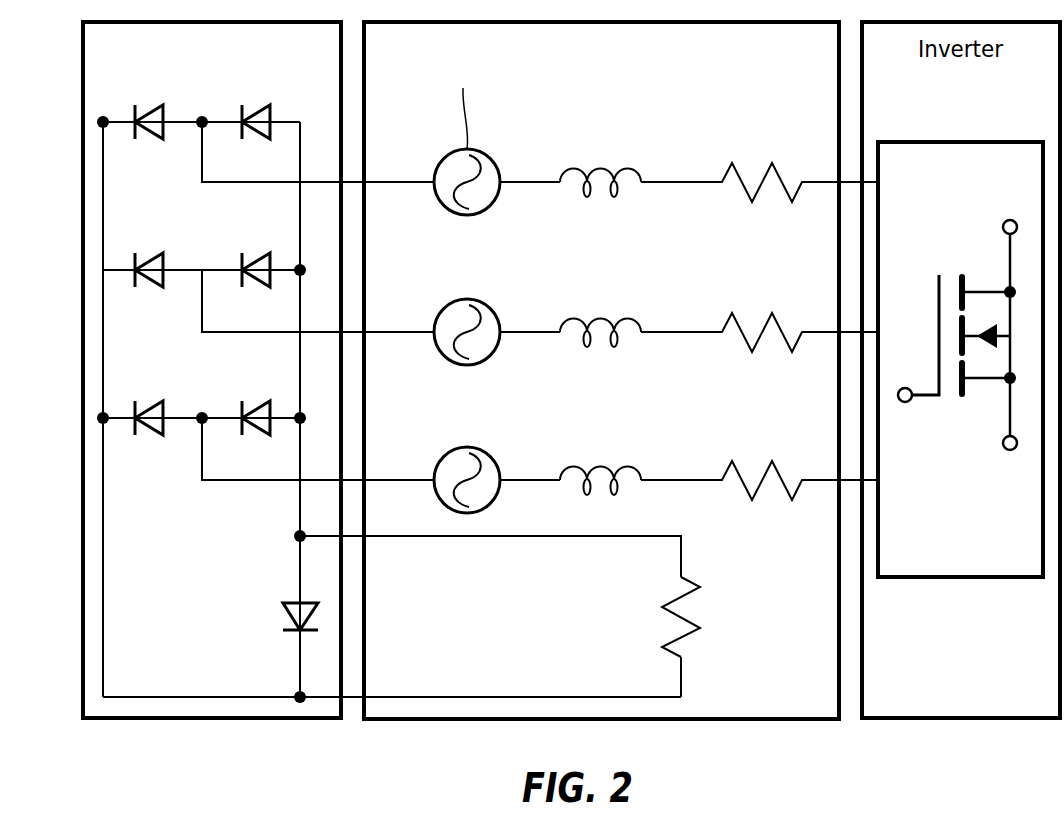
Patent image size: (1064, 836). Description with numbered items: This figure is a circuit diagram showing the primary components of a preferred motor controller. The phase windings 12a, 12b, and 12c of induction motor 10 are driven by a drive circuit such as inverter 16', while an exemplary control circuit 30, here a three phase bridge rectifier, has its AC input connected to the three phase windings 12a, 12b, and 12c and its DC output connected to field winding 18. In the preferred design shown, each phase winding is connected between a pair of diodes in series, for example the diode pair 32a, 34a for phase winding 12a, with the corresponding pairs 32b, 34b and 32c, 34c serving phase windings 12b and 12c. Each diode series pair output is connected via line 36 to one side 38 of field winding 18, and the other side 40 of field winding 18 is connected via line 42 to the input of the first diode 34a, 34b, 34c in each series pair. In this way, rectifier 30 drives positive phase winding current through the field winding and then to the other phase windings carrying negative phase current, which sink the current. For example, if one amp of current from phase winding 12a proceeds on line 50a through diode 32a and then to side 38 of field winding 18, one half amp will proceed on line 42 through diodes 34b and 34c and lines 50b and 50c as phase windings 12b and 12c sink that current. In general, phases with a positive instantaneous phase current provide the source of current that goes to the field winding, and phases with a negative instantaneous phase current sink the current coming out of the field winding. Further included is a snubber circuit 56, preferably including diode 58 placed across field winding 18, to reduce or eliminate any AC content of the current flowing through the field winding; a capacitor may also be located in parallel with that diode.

The control circuit 30 is at (227, 96).
The induction motor 10 is at (614, 96).
The inverter 16' is at (960, 359).
The diode 32a is at (152, 128).
The diode 32b is at (152, 276).
The diode 32c is at (152, 424).
The first diode 34a is at (258, 128).
The first diode 34b is at (258, 276).
The first diode 34c is at (258, 424).
The line 50a is at (403, 182).
The line 50b is at (403, 332).
The line 50c is at (403, 480).
The phase winding 12a is at (628, 165).
The phase winding 12b is at (621, 314).
The phase winding 12c is at (626, 462).
The line 36 is at (104, 585).
The line 42 is at (300, 548).
The snubber circuit 56 is at (280, 617).
The diode 58 is at (303, 633).
The other side of field winding 40 is at (681, 561).
The field winding 18 is at (690, 617).
The one side of field winding 38 is at (681, 680).